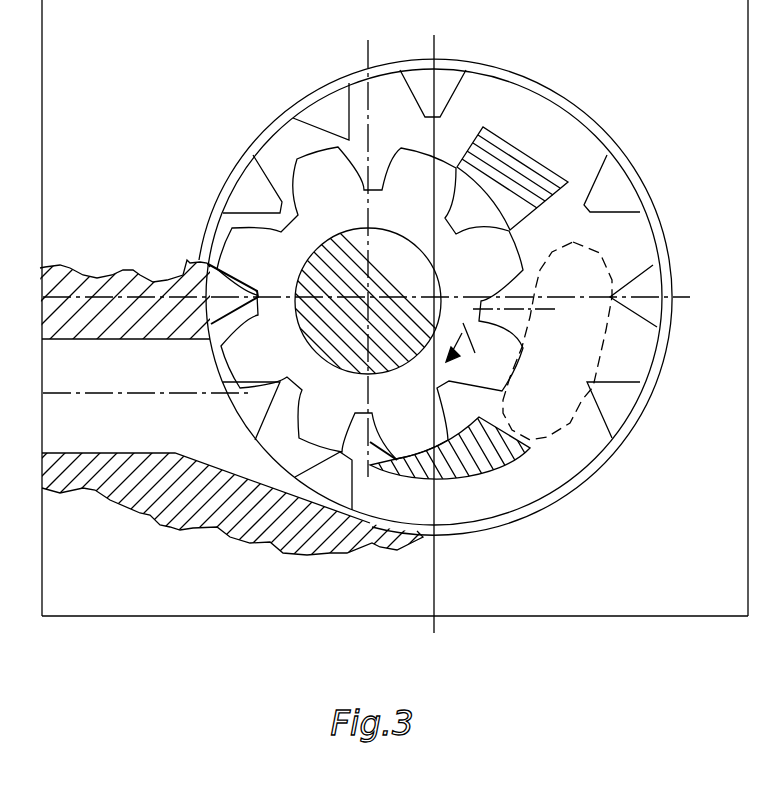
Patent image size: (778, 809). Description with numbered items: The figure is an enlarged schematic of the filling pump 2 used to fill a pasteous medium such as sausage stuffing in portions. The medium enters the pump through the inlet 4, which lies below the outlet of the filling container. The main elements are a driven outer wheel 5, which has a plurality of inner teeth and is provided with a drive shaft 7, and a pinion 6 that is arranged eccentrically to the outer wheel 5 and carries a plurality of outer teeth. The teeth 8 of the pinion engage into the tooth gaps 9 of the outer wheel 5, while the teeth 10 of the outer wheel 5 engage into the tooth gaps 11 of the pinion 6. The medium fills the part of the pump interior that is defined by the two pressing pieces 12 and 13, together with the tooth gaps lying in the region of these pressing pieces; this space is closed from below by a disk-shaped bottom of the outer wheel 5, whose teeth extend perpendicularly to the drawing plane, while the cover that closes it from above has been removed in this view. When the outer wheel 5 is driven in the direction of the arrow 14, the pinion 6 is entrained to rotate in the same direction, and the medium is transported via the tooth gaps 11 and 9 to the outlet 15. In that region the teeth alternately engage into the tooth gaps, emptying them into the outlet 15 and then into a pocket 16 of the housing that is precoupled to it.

The filling pump 2 is at (343, 618).
The inlet 4 is at (614, 268).
The outer wheel 5 is at (497, 97).
The pinion 6 is at (391, 216).
The drive shaft 7 is at (350, 342).
The teeth of the pinion 8 is at (243, 232).
The tooth gaps of the outer wheel 9 is at (627, 240).
The teeth of the outer wheel 10 is at (327, 110).
The tooth gaps of the pinion 11 is at (460, 417).
The pressing piece 12 is at (532, 167).
The pressing piece 13 is at (493, 448).
The arrow 14 is at (474, 346).
The outlet 15 is at (72, 432).
The pocket 16 is at (372, 523).